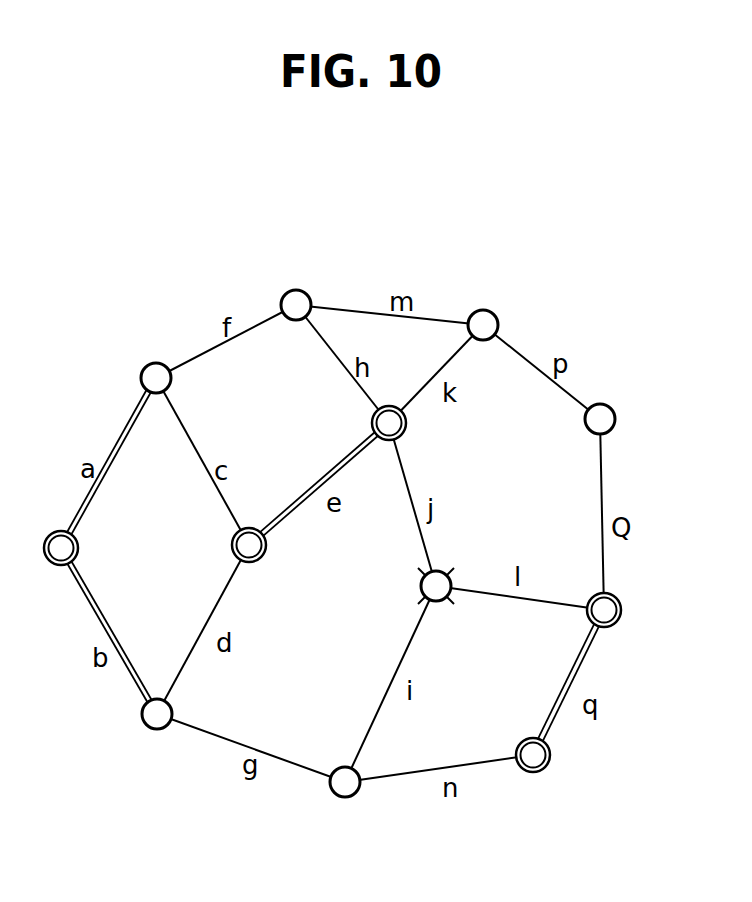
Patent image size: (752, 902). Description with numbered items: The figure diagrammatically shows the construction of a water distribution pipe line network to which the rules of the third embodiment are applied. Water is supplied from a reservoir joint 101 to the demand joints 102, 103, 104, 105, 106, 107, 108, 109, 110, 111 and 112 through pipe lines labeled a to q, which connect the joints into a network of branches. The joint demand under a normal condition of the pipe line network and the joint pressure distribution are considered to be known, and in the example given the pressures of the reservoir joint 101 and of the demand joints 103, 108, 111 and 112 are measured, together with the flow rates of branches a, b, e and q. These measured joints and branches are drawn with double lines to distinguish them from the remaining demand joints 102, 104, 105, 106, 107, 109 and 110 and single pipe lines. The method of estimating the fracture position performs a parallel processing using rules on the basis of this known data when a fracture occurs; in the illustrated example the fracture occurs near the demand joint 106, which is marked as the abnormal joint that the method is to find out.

The reservoir joint 101 is at (55, 563).
The demand joint 102 is at (147, 366).
The demand joint 103 is at (260, 558).
The demand joint 104 is at (162, 730).
The demand joint 105 is at (351, 797).
The demand joint 106 is at (443, 600).
The demand joint 107 is at (289, 292).
The demand joint 108 is at (403, 432).
The demand joint 109 is at (494, 314).
The demand joint 110 is at (613, 427).
The demand joint 111 is at (619, 618).
The demand joint 112 is at (549, 760).